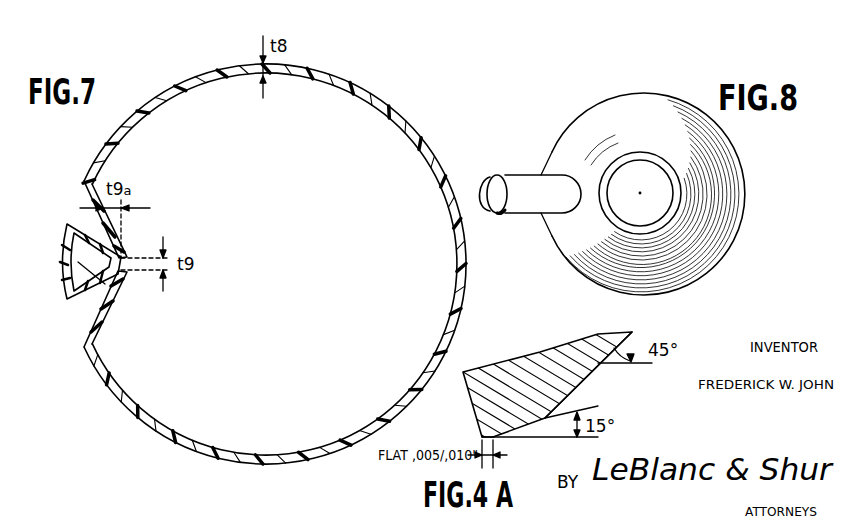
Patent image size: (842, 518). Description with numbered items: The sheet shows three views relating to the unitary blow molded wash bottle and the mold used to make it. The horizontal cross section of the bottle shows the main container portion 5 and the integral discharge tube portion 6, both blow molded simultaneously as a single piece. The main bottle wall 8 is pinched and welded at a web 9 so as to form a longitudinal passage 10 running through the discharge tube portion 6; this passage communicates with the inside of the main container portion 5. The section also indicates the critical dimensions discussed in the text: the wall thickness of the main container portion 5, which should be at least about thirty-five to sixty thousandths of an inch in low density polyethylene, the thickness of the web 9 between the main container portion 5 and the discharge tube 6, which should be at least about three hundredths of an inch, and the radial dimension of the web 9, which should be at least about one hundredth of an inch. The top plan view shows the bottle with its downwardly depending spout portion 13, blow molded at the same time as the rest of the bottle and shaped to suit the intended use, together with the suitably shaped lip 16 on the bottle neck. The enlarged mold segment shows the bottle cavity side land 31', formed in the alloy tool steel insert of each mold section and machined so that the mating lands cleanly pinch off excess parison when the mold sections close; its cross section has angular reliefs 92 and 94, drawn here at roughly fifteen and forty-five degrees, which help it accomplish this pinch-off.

In FIG. 7, the main container portion 5 is at (171, 407).
In FIG. 7, the discharge tube portion 6 is at (83, 302).
In FIG. 7, the main bottle wall 8 is at (143, 125).
In FIG. 7, the web 9 is at (121, 258).
In FIG. 7, the longitudinal passage 10 is at (117, 280).
In FIG. 8, the spout portion 13 is at (524, 175).
In FIG. 8, the lip 16 is at (659, 159).
In FIG. 4A, the bottle cavity side land 31' is at (540, 384).
In FIG. 4A, the angular relief 92 is at (497, 440).
In FIG. 4A, the angular relief 94 is at (583, 380).